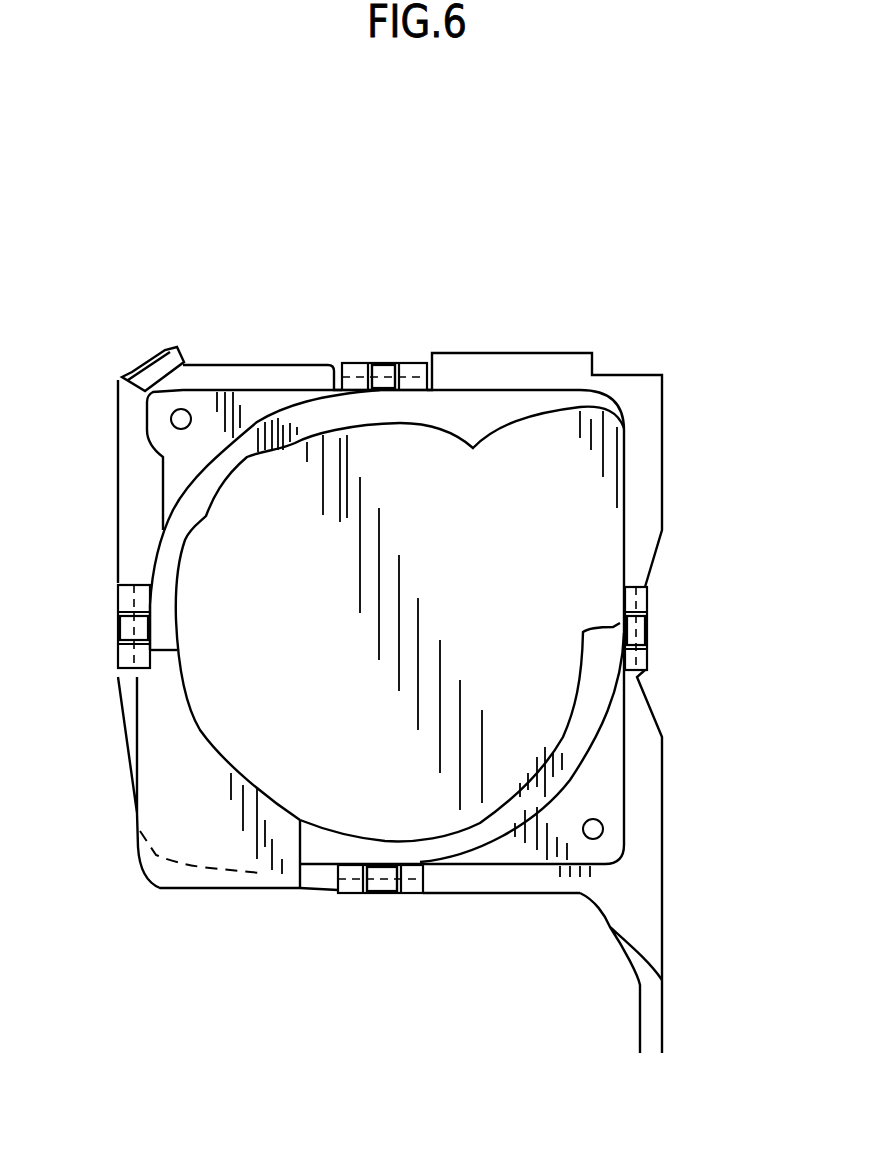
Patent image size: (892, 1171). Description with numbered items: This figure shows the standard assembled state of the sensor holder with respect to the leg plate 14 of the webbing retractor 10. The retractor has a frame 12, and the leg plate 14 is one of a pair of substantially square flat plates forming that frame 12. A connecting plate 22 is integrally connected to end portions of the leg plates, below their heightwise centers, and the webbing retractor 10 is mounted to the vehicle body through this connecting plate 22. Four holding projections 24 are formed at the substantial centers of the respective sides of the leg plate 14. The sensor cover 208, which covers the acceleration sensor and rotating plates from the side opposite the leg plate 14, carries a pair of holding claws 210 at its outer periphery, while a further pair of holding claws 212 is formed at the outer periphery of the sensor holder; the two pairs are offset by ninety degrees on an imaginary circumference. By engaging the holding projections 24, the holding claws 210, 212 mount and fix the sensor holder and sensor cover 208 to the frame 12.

The webbing retractor 10 is at (593, 272).
The frame 12 is at (663, 406).
The leg plate 14 is at (118, 460).
The connecting plate 22 is at (663, 993).
The holding projection 24 is at (385, 365).
The sensor cover 208 is at (590, 500).
The holding claw 210 is at (131, 601).
The holding claw 212 is at (350, 372).